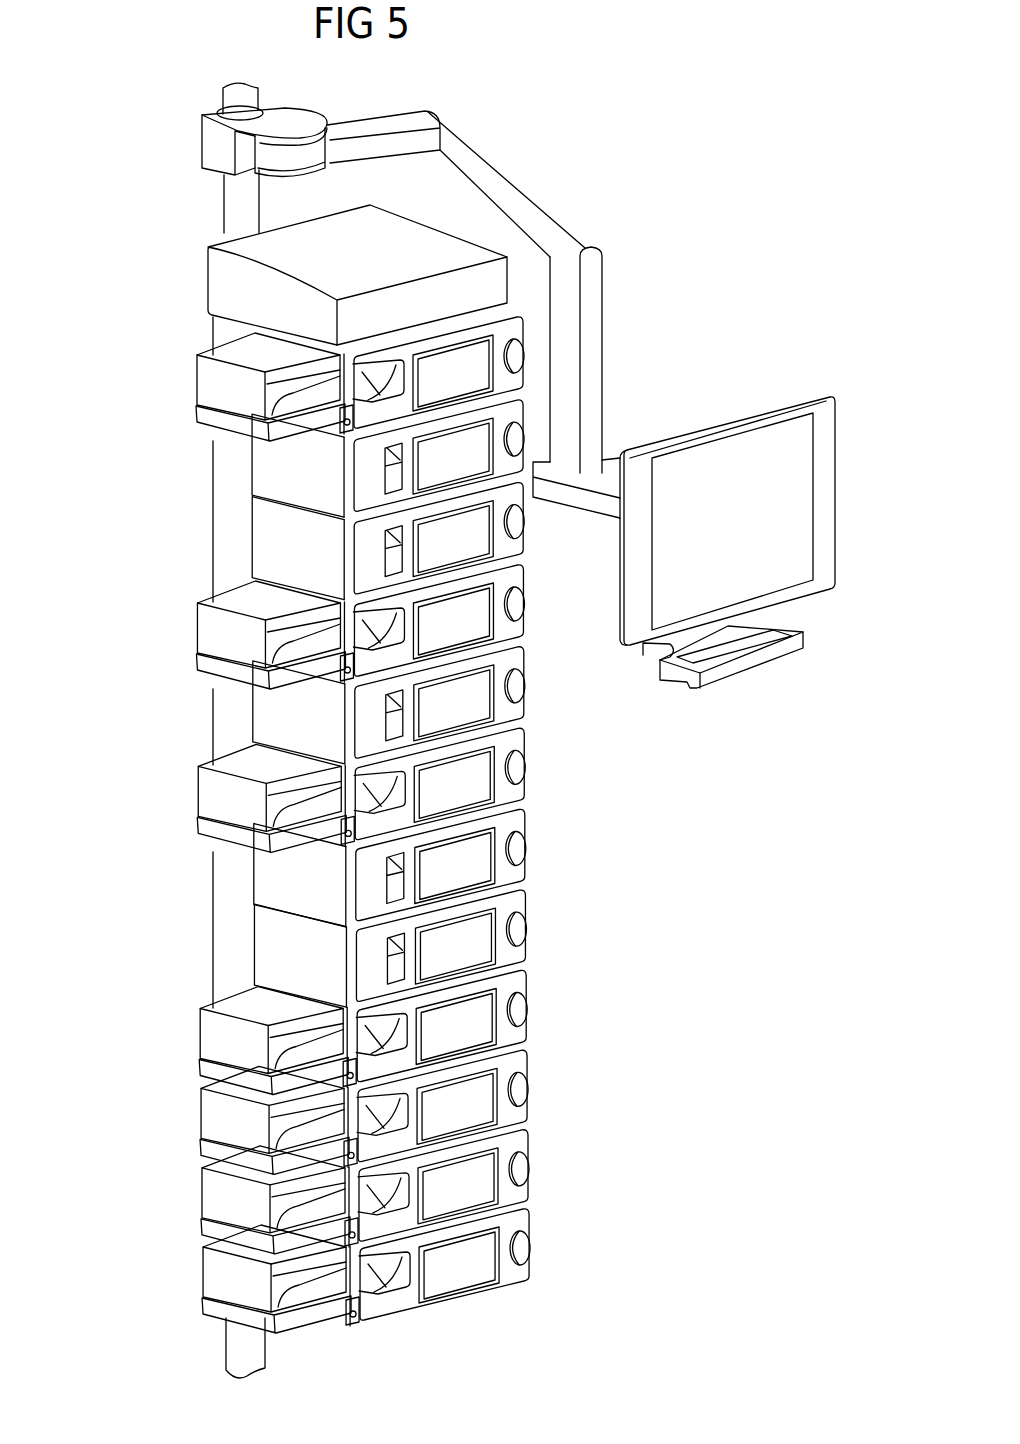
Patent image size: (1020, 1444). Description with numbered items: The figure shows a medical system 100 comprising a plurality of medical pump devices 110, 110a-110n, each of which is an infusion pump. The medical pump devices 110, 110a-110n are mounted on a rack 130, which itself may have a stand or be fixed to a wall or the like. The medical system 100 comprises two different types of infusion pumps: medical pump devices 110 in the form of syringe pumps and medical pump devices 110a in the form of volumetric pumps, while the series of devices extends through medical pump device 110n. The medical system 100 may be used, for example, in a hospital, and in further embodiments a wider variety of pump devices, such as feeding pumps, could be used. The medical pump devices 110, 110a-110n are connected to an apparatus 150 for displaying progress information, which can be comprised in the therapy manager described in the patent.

The medical system 100 is at (766, 248).
The medical pump device 110 is at (163, 376).
The medical pump device 110a is at (176, 485).
The medical pump device 110n is at (178, 887).
The rack 130 is at (195, 223).
The apparatus for displaying progress information 150 is at (855, 431).